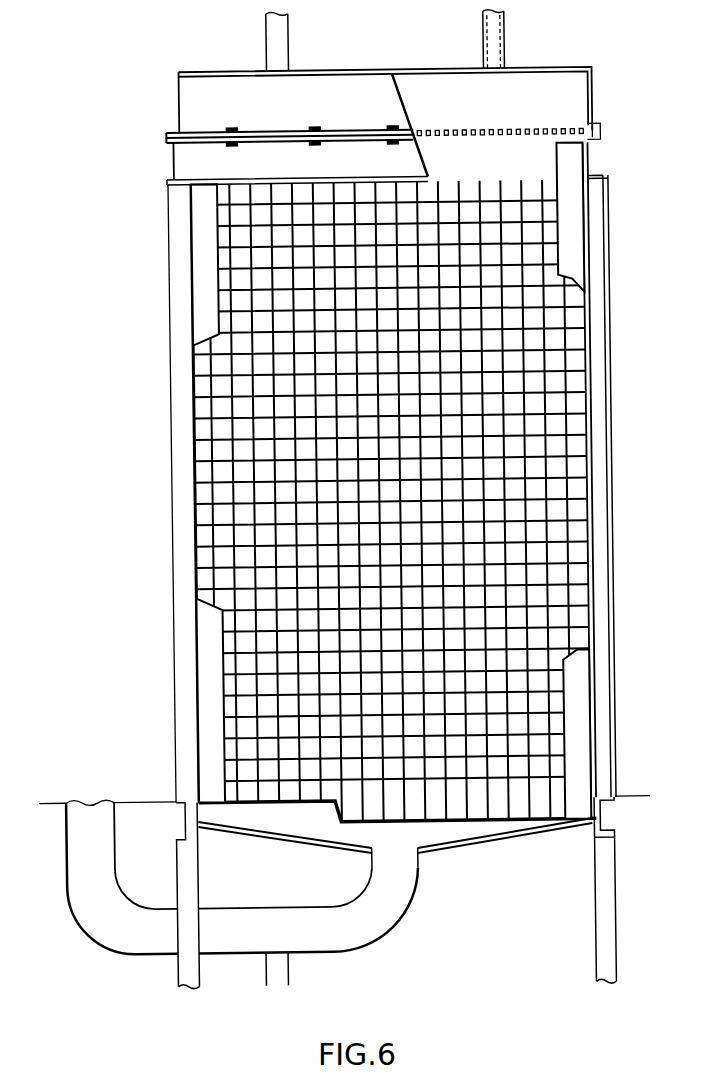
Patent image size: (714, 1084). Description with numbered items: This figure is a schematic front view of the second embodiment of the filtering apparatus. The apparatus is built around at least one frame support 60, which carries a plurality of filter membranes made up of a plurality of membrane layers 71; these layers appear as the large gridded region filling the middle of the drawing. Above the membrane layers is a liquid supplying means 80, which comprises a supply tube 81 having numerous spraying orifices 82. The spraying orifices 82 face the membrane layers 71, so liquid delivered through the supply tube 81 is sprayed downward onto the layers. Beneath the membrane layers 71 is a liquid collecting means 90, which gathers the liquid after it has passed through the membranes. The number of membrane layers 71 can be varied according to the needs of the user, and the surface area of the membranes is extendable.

The frame support 60 is at (593, 163).
The membrane layers 71 is at (547, 342).
The liquid supplying means 80 is at (598, 88).
The supply tube 81 is at (534, 83).
The spraying orifices 82 is at (558, 128).
The liquid collecting means 90 is at (510, 850).